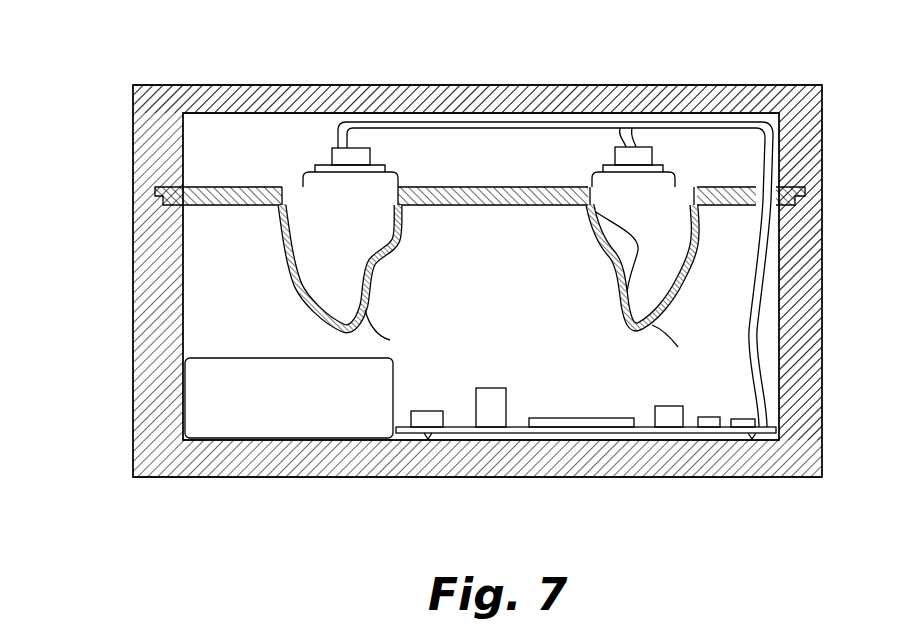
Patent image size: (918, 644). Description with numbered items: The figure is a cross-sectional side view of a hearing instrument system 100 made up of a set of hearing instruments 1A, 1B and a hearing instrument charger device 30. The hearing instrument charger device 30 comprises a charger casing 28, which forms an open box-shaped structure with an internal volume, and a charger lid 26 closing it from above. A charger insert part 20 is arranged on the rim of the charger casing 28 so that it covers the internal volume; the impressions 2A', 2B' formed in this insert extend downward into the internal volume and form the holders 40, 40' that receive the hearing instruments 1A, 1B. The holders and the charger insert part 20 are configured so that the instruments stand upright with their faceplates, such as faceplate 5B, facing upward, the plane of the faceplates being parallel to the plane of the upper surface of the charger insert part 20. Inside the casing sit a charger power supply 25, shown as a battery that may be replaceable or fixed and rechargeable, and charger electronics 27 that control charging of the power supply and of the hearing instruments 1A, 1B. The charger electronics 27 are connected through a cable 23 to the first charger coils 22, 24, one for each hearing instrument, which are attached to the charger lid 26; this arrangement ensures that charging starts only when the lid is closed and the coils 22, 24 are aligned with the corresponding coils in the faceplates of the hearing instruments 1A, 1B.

The hearing instrument system 100 is at (126, 56).
The hearing instrument charger device 30 is at (108, 272).
The charger lid 26 is at (440, 85).
The charger casing 28 is at (823, 345).
The charger insert part 20 is at (500, 207).
The charger power supply 25 is at (236, 357).
The charger electronics 27 is at (584, 418).
The cable 23 is at (490, 128).
The left charger coil 24 is at (372, 158).
The right charger coil 22 is at (613, 158).
The hearing instrument 1A is at (650, 278).
The hearing instrument 1B is at (317, 238).
The faceplate 5B is at (318, 170).
The impression of left inlay 2A' is at (661, 233).
The impression of right inlay 2B' is at (312, 231).
The holder 40 is at (410, 332).
The holder 40' is at (683, 348).